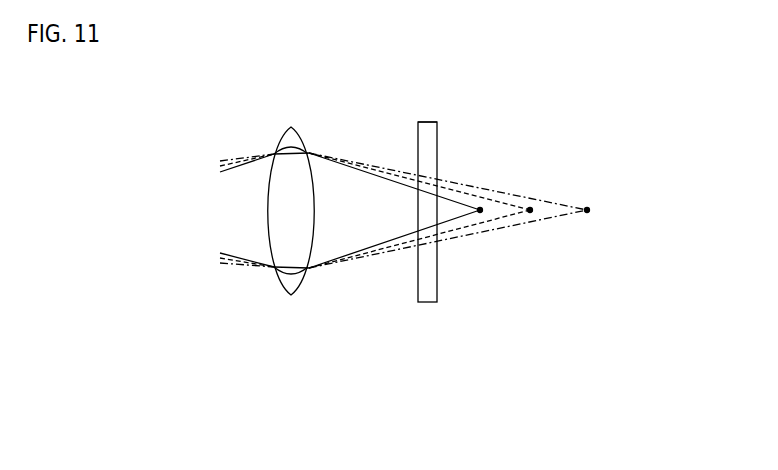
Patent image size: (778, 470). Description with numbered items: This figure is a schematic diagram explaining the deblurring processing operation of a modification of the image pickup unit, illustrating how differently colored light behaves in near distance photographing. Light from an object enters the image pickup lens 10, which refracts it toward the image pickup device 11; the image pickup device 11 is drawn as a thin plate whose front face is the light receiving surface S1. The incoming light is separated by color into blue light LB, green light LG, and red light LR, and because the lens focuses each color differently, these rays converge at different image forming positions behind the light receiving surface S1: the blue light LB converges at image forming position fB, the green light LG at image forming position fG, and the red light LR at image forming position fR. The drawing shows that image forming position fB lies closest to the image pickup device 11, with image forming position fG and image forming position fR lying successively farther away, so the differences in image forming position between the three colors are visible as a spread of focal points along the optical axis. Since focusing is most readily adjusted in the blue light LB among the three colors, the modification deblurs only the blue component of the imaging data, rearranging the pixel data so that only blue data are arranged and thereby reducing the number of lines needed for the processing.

The image pickup lens 10 is at (288, 315).
The image pickup device 11 is at (422, 315).
The light receiving surface S1 is at (424, 120).
The blue light LB is at (461, 203).
The green light LG is at (506, 198).
The red light LR is at (567, 206).
The image forming position of blue light fB is at (481, 216).
The image forming position of green light fG is at (531, 216).
The image forming position of red light fR is at (588, 216).